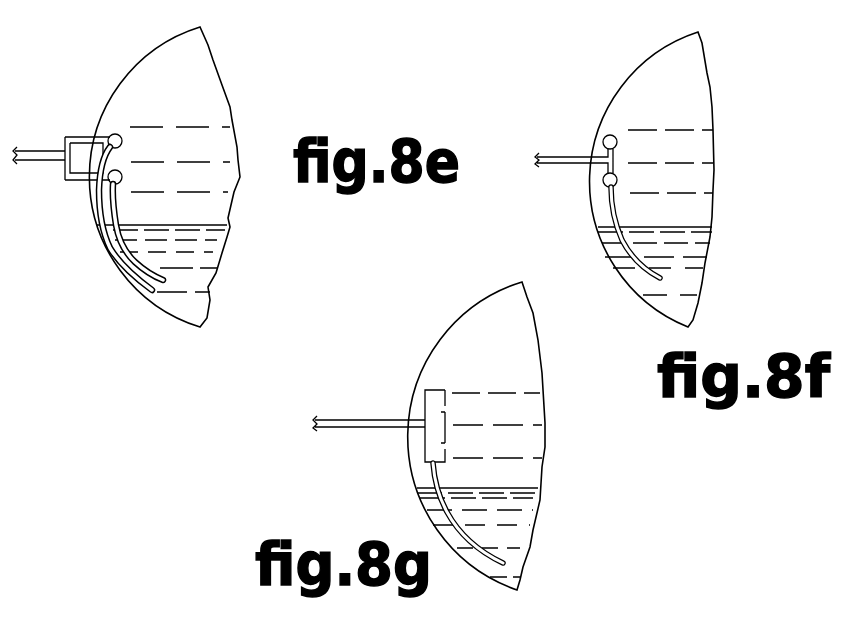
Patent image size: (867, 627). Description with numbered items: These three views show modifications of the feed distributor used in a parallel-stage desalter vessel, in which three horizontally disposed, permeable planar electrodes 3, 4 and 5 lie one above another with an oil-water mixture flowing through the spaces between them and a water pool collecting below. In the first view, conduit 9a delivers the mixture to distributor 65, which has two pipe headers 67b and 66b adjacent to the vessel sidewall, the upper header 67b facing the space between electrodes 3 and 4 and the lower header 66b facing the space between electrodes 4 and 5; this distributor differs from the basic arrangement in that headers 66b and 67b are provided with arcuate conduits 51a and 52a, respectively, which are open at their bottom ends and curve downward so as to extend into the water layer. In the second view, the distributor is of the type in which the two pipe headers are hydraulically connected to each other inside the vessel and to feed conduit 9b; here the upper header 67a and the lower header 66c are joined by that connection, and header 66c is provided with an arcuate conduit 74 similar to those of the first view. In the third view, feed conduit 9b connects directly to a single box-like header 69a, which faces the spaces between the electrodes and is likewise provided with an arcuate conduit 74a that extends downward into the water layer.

In FIG. 8E, the planar electrode 3 is at (203, 127).
In FIG. 8F, the planar electrode 3 is at (690, 130).
In FIG. 8G, the planar electrode 3 is at (526, 393).
In FIG. 8E, the planar electrode 4 is at (208, 162).
In FIG. 8F, the planar electrode 4 is at (708, 158).
In FIG. 8G, the planar electrode 4 is at (538, 425).
In FIG. 8E, the planar electrode 5 is at (218, 192).
In FIG. 8F, the planar electrode 5 is at (703, 193).
In FIG. 8G, the planar electrode 5 is at (536, 458).
In FIG. 8E, the conduit 9a is at (45, 161).
In FIG. 8F, the feed conduit 9b is at (570, 156).
In FIG. 8G, the feed conduit 9b is at (360, 419).
In FIG. 8E, the distributor 65 is at (65, 138).
In FIG. 8E, the distributor header 67b is at (113, 134).
In FIG. 8E, the distributor header 66b is at (122, 180).
In FIG. 8E, the arcuate conduit 52a is at (114, 257).
In FIG. 8E, the arcuate conduit 51a is at (140, 290).
In FIG. 8F, the distributor header 67a is at (618, 141).
In FIG. 8F, the distributor header 66c is at (618, 182).
In FIG. 8F, the arcuate conduit 74 is at (622, 222).
In FIG. 8G, the box-like header 69a is at (437, 396).
In FIG. 8G, the arcuate conduit 74a is at (451, 499).